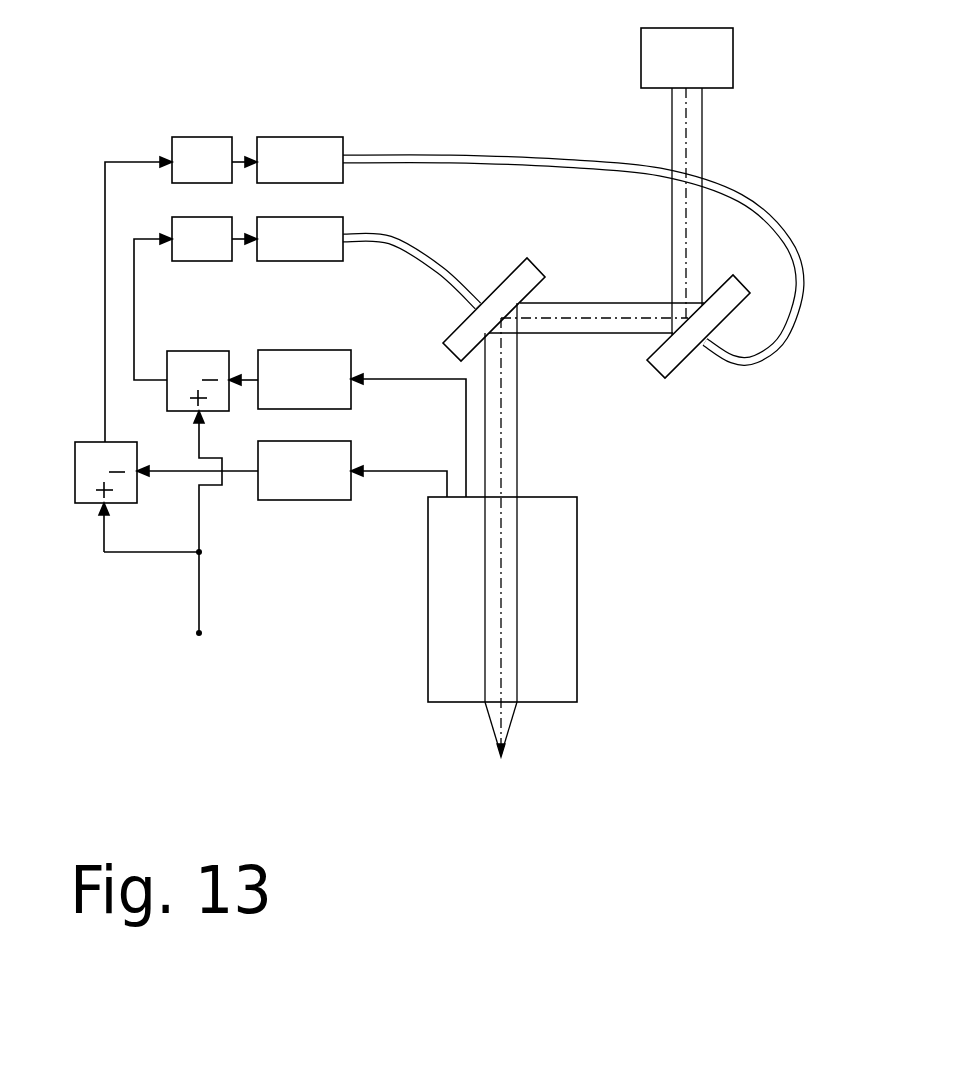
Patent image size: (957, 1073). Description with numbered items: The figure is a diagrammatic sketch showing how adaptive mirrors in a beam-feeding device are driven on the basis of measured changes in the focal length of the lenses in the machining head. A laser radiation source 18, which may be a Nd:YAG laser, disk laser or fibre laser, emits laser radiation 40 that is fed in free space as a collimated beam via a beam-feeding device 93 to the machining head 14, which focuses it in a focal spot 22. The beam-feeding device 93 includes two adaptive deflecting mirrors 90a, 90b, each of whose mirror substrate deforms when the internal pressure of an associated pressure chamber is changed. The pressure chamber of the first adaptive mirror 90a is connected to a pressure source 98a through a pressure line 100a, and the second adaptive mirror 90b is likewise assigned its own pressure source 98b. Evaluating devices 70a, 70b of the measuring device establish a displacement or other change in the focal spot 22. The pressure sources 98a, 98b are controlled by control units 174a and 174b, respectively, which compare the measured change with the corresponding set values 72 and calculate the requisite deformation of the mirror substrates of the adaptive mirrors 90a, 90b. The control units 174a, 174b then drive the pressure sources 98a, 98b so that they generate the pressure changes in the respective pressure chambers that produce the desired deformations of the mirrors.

The machining head 14 is at (577, 532).
The laser radiation source 18 is at (733, 58).
The focal spot 22 is at (500, 758).
The laser radiation 40 is at (518, 433).
The evaluating device 70a is at (323, 499).
The evaluating device 70b is at (305, 349).
The set values 72 is at (200, 633).
The first adaptive mirror 90a is at (672, 347).
The second adaptive mirror 90b is at (508, 268).
The beam-feeding device 93 is at (613, 263).
The pressure source 98a is at (313, 145).
The pressure source 98b is at (310, 253).
The pressure line 100a is at (458, 153).
The control unit 174a is at (196, 147).
The control unit 174b is at (210, 253).